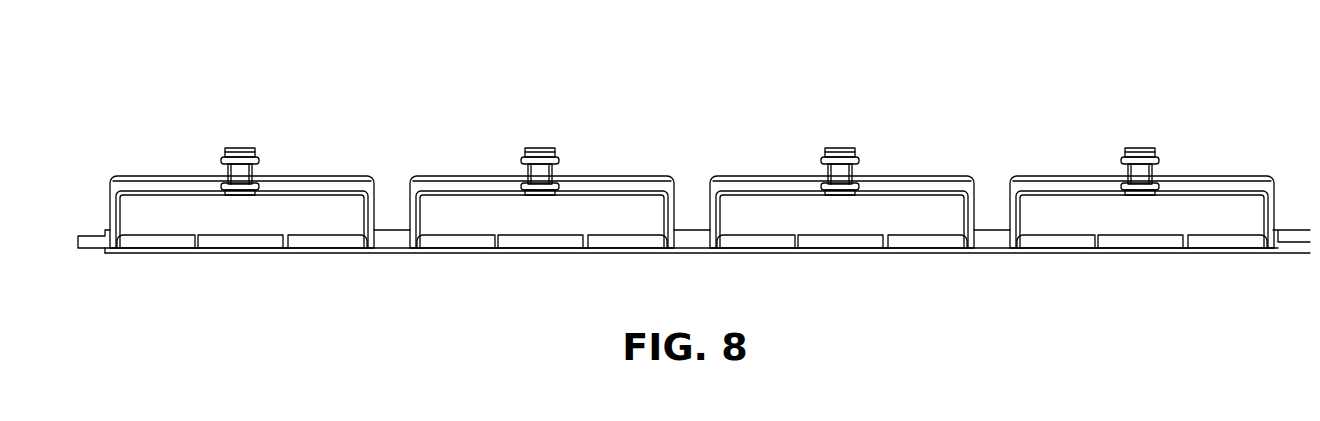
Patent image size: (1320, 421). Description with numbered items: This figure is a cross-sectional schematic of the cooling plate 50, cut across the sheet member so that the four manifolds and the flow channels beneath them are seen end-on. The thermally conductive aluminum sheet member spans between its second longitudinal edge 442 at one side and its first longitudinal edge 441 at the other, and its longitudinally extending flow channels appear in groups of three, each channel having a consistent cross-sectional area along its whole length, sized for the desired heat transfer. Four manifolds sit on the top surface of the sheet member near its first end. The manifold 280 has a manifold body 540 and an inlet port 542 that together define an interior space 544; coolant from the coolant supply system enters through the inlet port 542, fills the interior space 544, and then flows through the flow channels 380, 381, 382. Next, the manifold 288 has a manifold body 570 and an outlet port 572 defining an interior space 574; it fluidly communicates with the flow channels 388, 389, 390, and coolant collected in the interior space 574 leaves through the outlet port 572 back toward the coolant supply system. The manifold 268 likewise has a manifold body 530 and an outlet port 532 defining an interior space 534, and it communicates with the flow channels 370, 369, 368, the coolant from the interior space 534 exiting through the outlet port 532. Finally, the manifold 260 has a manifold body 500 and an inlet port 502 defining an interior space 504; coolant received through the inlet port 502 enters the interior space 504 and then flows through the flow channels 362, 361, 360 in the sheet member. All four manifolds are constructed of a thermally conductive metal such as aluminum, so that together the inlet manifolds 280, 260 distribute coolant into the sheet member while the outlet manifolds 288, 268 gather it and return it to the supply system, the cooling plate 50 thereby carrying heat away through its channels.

The cooling plate 50 is at (758, 70).
The second longitudinal edge 442 is at (78, 242).
The first longitudinal edge 441 is at (1310, 252).
The manifold 280 is at (289, 167).
The manifold body 540 is at (351, 176).
The interior space 544 is at (163, 213).
The inlet port 542 is at (238, 148).
The flow channel 380 is at (155, 242).
The flow channel 381 is at (243, 242).
The flow channel 382 is at (328, 242).
The manifold 288 is at (589, 167).
The manifold body 570 is at (651, 176).
The interior space 574 is at (463, 213).
The outlet port 572 is at (538, 148).
The flow channel 388 is at (455, 242).
The flow channel 389 is at (543, 242).
The flow channel 390 is at (628, 242).
The manifold 268 is at (889, 167).
The manifold body 530 is at (951, 176).
The interior space 534 is at (763, 213).
The outlet port 532 is at (838, 148).
The flow channel 370 is at (755, 242).
The flow channel 369 is at (843, 242).
The flow channel 368 is at (928, 242).
The manifold 260 is at (1189, 167).
The manifold body 500 is at (1251, 176).
The interior space 504 is at (1063, 213).
The inlet port 502 is at (1138, 148).
The flow channel 362 is at (1055, 242).
The flow channel 361 is at (1143, 242).
The flow channel 360 is at (1228, 242).